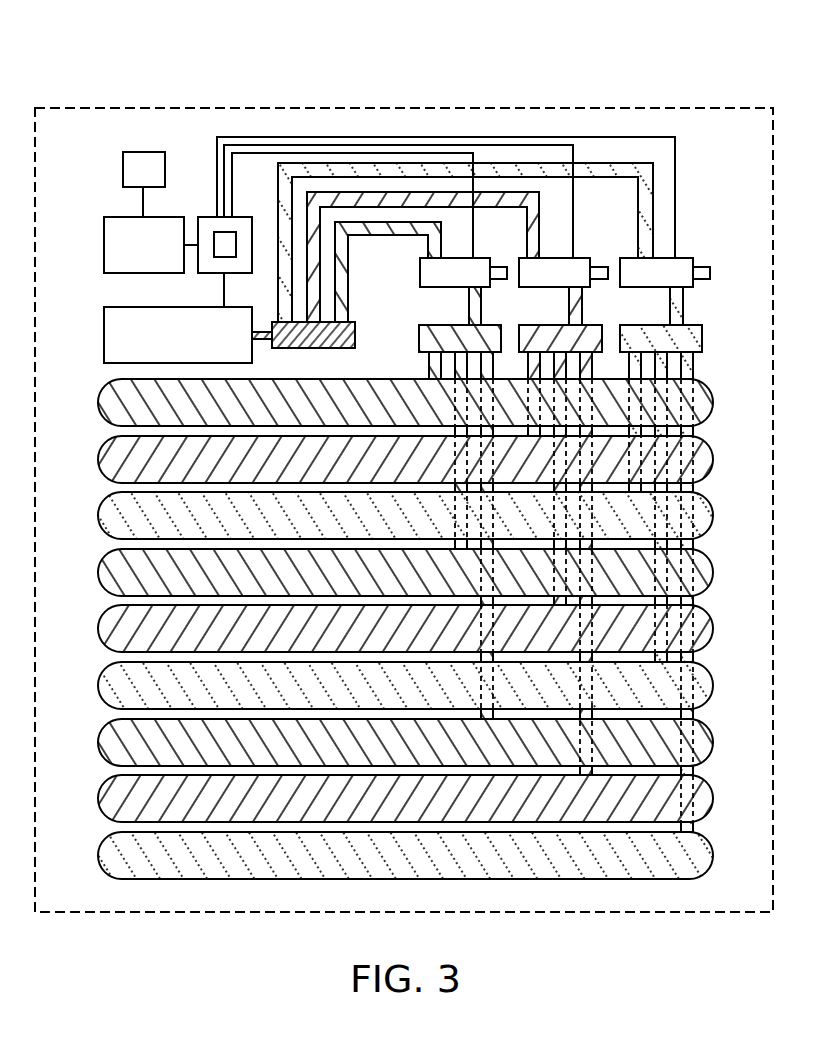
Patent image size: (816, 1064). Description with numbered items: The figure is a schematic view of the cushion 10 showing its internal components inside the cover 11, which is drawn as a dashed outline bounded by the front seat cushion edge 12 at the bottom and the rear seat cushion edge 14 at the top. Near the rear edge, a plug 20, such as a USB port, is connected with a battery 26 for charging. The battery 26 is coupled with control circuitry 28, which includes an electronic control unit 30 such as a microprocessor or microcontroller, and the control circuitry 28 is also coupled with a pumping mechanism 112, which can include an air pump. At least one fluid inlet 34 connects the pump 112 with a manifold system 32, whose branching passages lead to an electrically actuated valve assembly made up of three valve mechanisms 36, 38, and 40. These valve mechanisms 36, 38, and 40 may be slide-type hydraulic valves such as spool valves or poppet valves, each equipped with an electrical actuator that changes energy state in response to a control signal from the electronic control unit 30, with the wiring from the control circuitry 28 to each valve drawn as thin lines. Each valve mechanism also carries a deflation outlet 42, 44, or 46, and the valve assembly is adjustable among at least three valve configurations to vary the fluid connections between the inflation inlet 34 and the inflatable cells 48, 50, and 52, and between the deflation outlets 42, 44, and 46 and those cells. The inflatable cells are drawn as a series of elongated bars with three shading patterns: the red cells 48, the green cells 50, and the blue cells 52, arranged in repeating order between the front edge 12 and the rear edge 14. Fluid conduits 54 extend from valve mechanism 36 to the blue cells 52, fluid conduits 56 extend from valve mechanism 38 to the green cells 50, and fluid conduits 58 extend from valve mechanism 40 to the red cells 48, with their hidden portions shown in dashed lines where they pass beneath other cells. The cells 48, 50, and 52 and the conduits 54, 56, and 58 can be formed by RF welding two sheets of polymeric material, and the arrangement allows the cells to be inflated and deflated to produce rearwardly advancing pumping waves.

The cushion 10 is at (90, 48).
The cover 11 is at (702, 108).
The front seat cushion edge 12 is at (256, 916).
The rear seat cushion edge 14 is at (433, 106).
The plug 20 is at (123, 163).
The battery 26 is at (104, 228).
The control circuitry 28 is at (243, 217).
The electronic control unit 30 is at (220, 232).
The manifold system 32 is at (692, 186).
The fluid inlet 34 is at (273, 325).
The valve mechanism 36 is at (420, 268).
The valve mechanism 38 is at (542, 258).
The valve mechanism 40 is at (636, 258).
The deflation outlet 42 is at (497, 267).
The deflation outlet 44 is at (597, 267).
The deflation outlet 46 is at (701, 267).
The inflatable cells 48 is at (98, 505).
The inflatable cells 50 is at (98, 449).
The inflatable cells 52 is at (98, 392).
The fluid conduits 54 is at (420, 369).
The fluid conduits 56 is at (524, 369).
The fluid conduits 58 is at (624, 369).
The pumping mechanism 112 is at (104, 320).